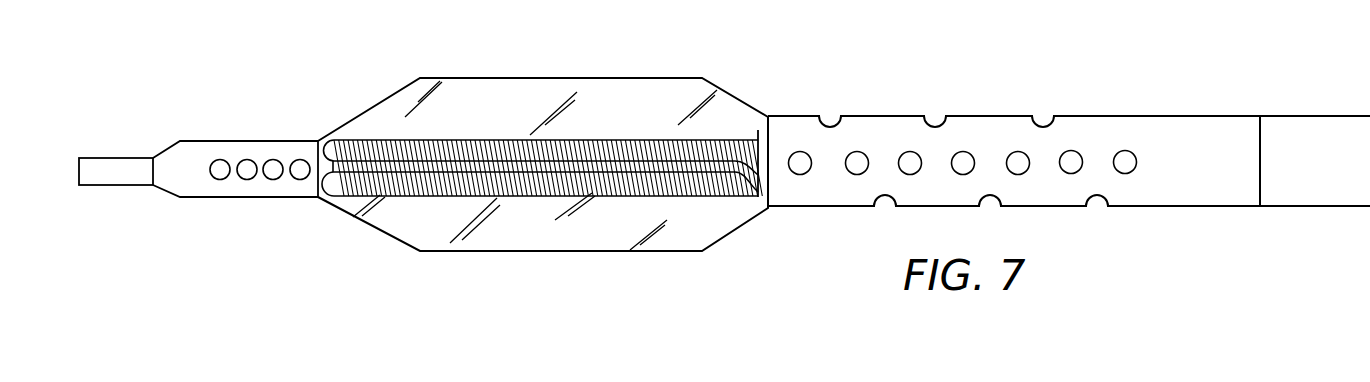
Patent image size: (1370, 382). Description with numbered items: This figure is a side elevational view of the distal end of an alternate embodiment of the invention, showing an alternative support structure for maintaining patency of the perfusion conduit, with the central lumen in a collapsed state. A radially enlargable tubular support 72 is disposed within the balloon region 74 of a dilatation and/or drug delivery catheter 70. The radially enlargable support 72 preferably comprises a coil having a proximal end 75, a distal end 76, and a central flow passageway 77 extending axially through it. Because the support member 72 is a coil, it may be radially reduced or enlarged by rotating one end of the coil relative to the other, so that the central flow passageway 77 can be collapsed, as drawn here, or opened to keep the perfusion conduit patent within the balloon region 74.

The dilatation and/or drug delivery catheter 70 is at (667, 60).
The radially enlargable tubular support 72 is at (340, 186).
The balloon region 74 is at (498, 252).
The proximal end 75 is at (757, 134).
The distal end 76 is at (318, 147).
The central flow passageway 77 is at (768, 184).